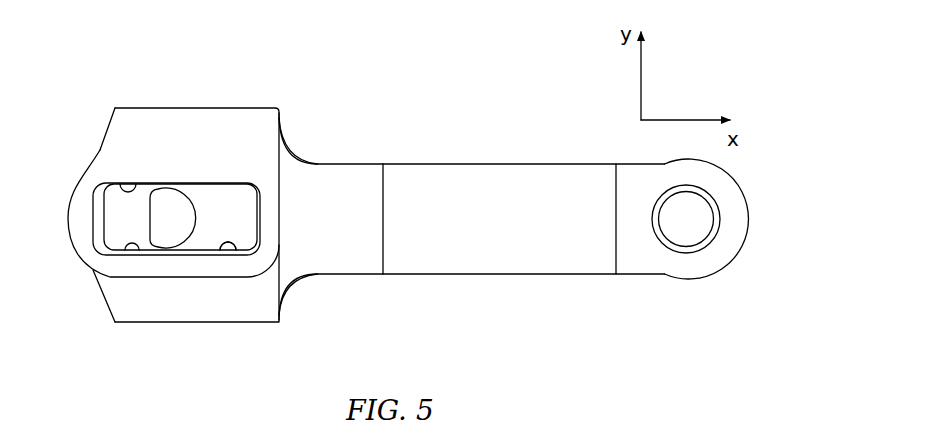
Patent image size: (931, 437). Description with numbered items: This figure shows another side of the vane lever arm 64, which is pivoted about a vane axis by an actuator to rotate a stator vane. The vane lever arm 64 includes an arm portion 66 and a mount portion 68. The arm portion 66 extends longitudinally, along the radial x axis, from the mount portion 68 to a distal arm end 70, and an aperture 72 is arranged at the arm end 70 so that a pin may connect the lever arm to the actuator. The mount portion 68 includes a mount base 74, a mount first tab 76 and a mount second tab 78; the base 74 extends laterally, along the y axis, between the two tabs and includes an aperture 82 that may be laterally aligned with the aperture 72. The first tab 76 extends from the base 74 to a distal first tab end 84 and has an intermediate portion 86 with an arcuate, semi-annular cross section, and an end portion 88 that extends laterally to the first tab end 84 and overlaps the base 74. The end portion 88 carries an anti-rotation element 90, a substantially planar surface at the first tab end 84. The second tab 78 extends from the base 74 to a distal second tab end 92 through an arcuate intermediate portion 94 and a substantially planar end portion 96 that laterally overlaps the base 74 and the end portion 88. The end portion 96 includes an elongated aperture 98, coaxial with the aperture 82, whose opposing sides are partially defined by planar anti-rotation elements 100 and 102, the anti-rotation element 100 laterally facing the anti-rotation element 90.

The vane lever arm 64 is at (107, 73).
The arm portion 66 is at (490, 158).
The mount portion 68 is at (231, 104).
The distal arm end 70 is at (746, 220).
The aperture 72 is at (675, 230).
The mount base 74 is at (107, 243).
The mount first tab 76 is at (112, 307).
The mount second tab 78 is at (100, 145).
The aperture 82 is at (165, 230).
The distal first tab end 84 is at (222, 250).
The intermediate portion 86 is at (265, 310).
The end portion 88 is at (96, 271).
The anti-rotation element 90 is at (228, 246).
The distal second tab end 92 is at (155, 280).
The intermediate portion 94 is at (262, 108).
The end portion 96 is at (68, 207).
The aperture 98 is at (242, 210).
The anti-rotation element 100 is at (119, 185).
The anti-rotation element 102 is at (126, 254).